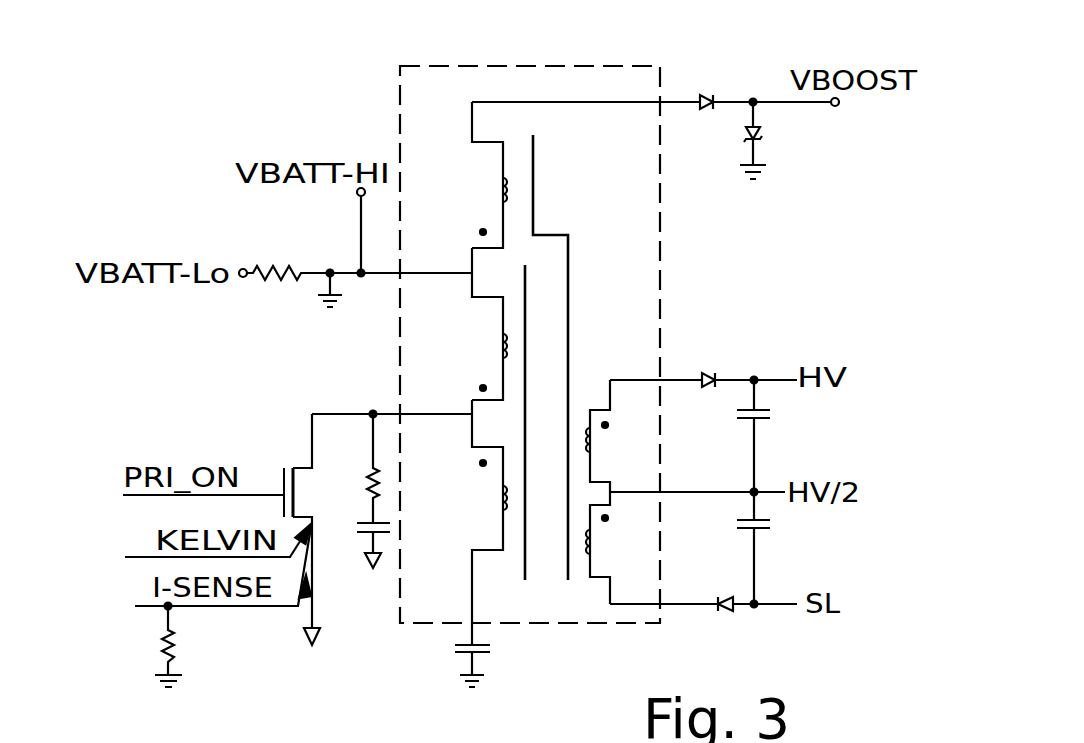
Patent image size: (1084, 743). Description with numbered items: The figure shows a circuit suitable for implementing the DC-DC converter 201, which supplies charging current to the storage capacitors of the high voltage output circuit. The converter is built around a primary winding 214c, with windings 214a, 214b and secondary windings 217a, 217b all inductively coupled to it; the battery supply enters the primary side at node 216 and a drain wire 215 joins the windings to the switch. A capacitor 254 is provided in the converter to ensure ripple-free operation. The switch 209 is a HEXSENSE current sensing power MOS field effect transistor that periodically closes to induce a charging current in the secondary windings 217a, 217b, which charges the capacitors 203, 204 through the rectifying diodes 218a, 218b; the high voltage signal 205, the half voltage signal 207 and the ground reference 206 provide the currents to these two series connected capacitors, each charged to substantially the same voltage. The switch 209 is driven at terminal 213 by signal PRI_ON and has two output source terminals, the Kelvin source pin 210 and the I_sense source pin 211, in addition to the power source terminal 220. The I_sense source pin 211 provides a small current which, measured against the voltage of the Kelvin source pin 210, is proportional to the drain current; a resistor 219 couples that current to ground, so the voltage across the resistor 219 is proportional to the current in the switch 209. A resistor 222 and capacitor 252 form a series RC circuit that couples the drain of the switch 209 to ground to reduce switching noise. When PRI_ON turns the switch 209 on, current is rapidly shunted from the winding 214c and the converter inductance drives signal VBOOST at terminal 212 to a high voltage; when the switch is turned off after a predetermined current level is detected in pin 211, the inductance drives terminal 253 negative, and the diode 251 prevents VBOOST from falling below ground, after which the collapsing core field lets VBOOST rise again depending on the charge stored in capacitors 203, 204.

The DC-DC converter 201 is at (607, 66).
The terminal 212 is at (770, 100).
The diode 251 is at (763, 135).
The terminal 253 is at (678, 104).
The winding 214a is at (503, 198).
The winding 214b is at (503, 352).
The primary winding 214c is at (503, 506).
The capacitor 254 is at (478, 652).
The battery input node 216 is at (375, 277).
The drain wire 215 is at (313, 414).
The resistor 222 is at (371, 465).
The capacitor 252 is at (358, 534).
The switch 209 is at (291, 492).
The terminal 213 is at (258, 494).
The Kelvin source pin 210 is at (138, 557).
The I_sense source pin 211 is at (245, 607).
The resistor 219 is at (160, 660).
The power source terminal 220 is at (318, 620).
The secondary winding 217a is at (598, 553).
The secondary winding 217b is at (598, 445).
The reference signal 205 is at (668, 380).
The rectifying diode 218a is at (708, 376).
The capacitor 203 is at (763, 422).
The reference signal 207 is at (695, 493).
The capacitor 204 is at (768, 528).
The ground reference 206 is at (690, 607).
The rectifying diode 218b is at (732, 612).